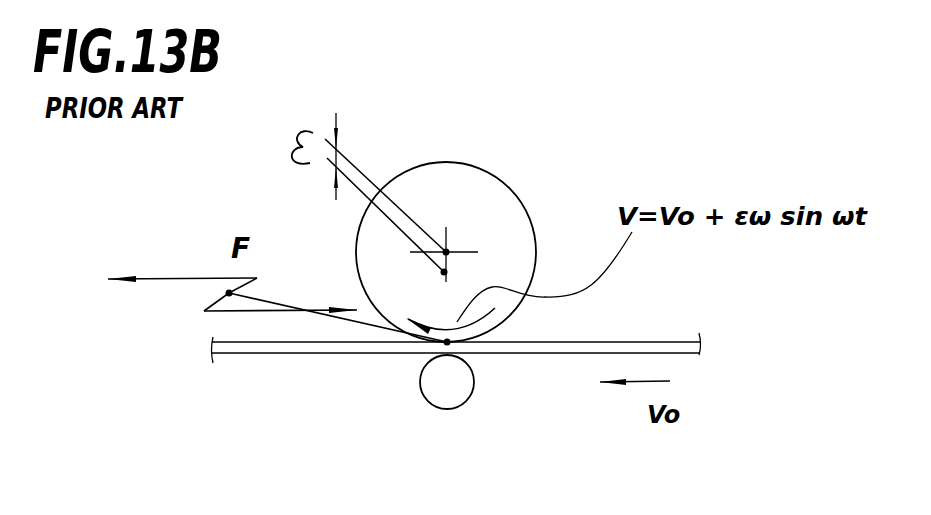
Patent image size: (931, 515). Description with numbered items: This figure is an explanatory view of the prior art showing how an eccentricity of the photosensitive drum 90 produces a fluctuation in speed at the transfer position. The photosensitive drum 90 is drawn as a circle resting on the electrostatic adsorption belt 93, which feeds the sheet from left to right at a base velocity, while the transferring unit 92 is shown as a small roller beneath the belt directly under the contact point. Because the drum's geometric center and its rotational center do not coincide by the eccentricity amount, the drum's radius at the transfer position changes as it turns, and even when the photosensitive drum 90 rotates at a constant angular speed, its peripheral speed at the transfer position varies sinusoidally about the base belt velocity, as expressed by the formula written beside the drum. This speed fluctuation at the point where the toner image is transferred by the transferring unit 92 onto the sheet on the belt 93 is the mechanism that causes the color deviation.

The photosensitive drum 90 is at (483, 172).
The transferring unit 92 is at (447, 409).
The electrostatic adsorption belt 93 is at (553, 353).